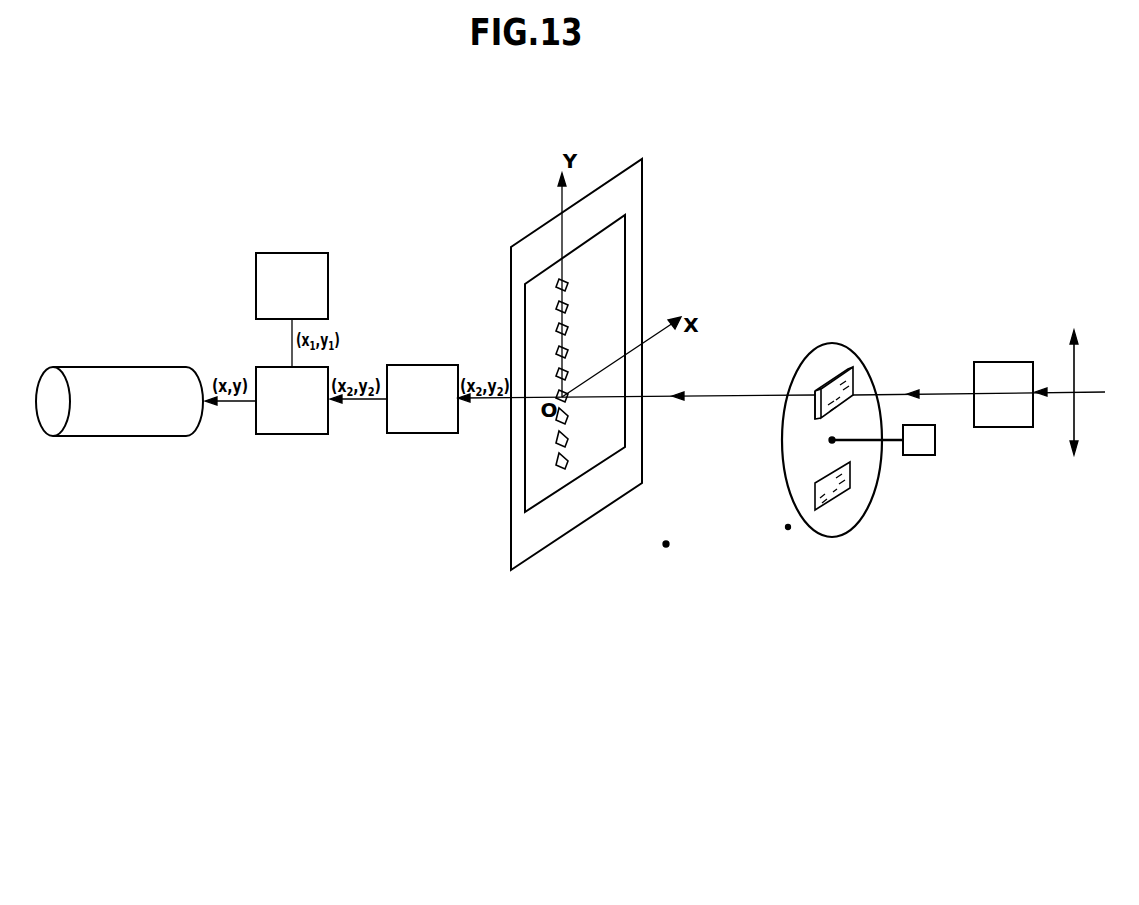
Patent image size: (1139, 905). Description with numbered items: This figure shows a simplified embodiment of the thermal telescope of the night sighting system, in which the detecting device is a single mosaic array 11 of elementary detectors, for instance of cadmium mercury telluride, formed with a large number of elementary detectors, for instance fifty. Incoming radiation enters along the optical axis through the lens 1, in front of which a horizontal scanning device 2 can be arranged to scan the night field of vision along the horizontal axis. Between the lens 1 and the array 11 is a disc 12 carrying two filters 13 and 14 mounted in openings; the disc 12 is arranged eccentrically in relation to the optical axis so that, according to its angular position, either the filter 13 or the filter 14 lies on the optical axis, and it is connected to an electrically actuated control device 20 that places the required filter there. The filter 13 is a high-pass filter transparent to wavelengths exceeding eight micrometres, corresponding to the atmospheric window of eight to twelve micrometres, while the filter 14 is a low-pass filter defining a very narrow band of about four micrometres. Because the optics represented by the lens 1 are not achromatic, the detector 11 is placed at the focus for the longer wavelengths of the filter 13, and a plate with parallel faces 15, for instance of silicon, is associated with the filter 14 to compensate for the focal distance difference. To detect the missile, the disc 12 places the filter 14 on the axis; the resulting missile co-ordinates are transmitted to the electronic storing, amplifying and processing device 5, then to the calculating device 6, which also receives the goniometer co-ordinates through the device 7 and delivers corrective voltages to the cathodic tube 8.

The lens 1 is at (1076, 378).
The horizontal scanning device 2 is at (1010, 430).
The electronic device 5 is at (424, 433).
The calculating device 6 is at (295, 435).
The electronic storing, amplifying and processing device 7 is at (318, 273).
The cathodic tube 8 is at (108, 376).
The mosaic array of elementary detectors 11 is at (560, 305).
The disc 12 is at (862, 508).
The high-pass filter 13 is at (830, 498).
The low-pass filter 14 is at (855, 367).
The plate with parallel faces 15 is at (815, 390).
The electrically actuated control device 20 is at (928, 448).